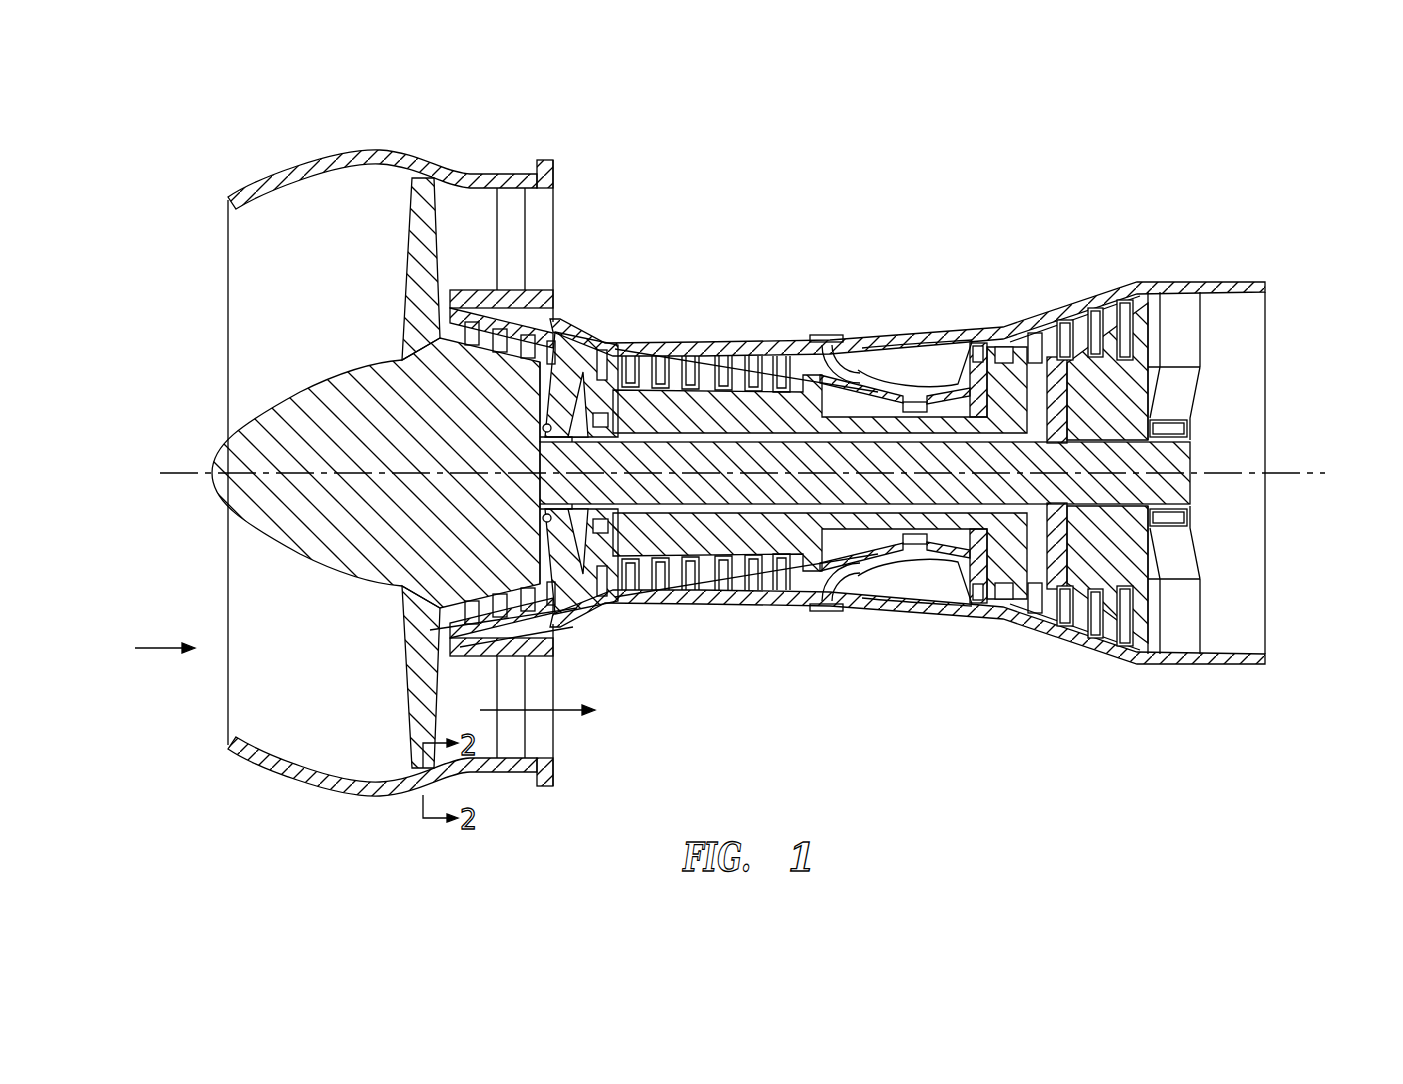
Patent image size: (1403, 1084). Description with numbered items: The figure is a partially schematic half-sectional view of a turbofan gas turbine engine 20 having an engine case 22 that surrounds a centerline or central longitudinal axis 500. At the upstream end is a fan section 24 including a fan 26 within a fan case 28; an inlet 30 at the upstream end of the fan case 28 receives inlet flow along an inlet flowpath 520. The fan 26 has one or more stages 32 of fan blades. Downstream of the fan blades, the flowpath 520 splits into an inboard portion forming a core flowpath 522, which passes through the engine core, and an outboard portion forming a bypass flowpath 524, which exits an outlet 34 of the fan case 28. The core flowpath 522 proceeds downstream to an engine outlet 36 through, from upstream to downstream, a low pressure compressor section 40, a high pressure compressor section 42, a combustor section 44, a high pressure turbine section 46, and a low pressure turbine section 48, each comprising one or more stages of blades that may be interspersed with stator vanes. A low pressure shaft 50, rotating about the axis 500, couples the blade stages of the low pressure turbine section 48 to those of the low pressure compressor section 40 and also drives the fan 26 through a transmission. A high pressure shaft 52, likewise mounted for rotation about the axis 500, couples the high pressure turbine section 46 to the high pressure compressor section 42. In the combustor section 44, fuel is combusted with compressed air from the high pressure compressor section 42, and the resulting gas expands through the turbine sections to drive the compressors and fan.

The gas turbine engine 20 is at (567, 195).
The engine case 22 is at (782, 622).
The fan section 24 is at (381, 812).
The fan 26 is at (387, 688).
The fan case 28 is at (447, 773).
The inlet 30 is at (205, 718).
The stages of fan blades 32 is at (426, 646).
The outlet of the fan case 34 is at (568, 250).
The engine outlet 36 is at (1285, 610).
The low pressure compressor section 40 is at (525, 330).
The high pressure compressor section 42 is at (703, 364).
The combustor section 44 is at (911, 362).
The high pressure turbine section 46 is at (990, 362).
The low pressure turbine section 48 is at (1124, 322).
The low pressure shaft 50 is at (912, 506).
The high pressure shaft 52 is at (958, 520).
The central longitudinal axis 500 is at (180, 470).
The inlet flowpath 520 is at (155, 646).
The core flowpath 522 is at (548, 626).
The bypass flowpath 524 is at (538, 714).